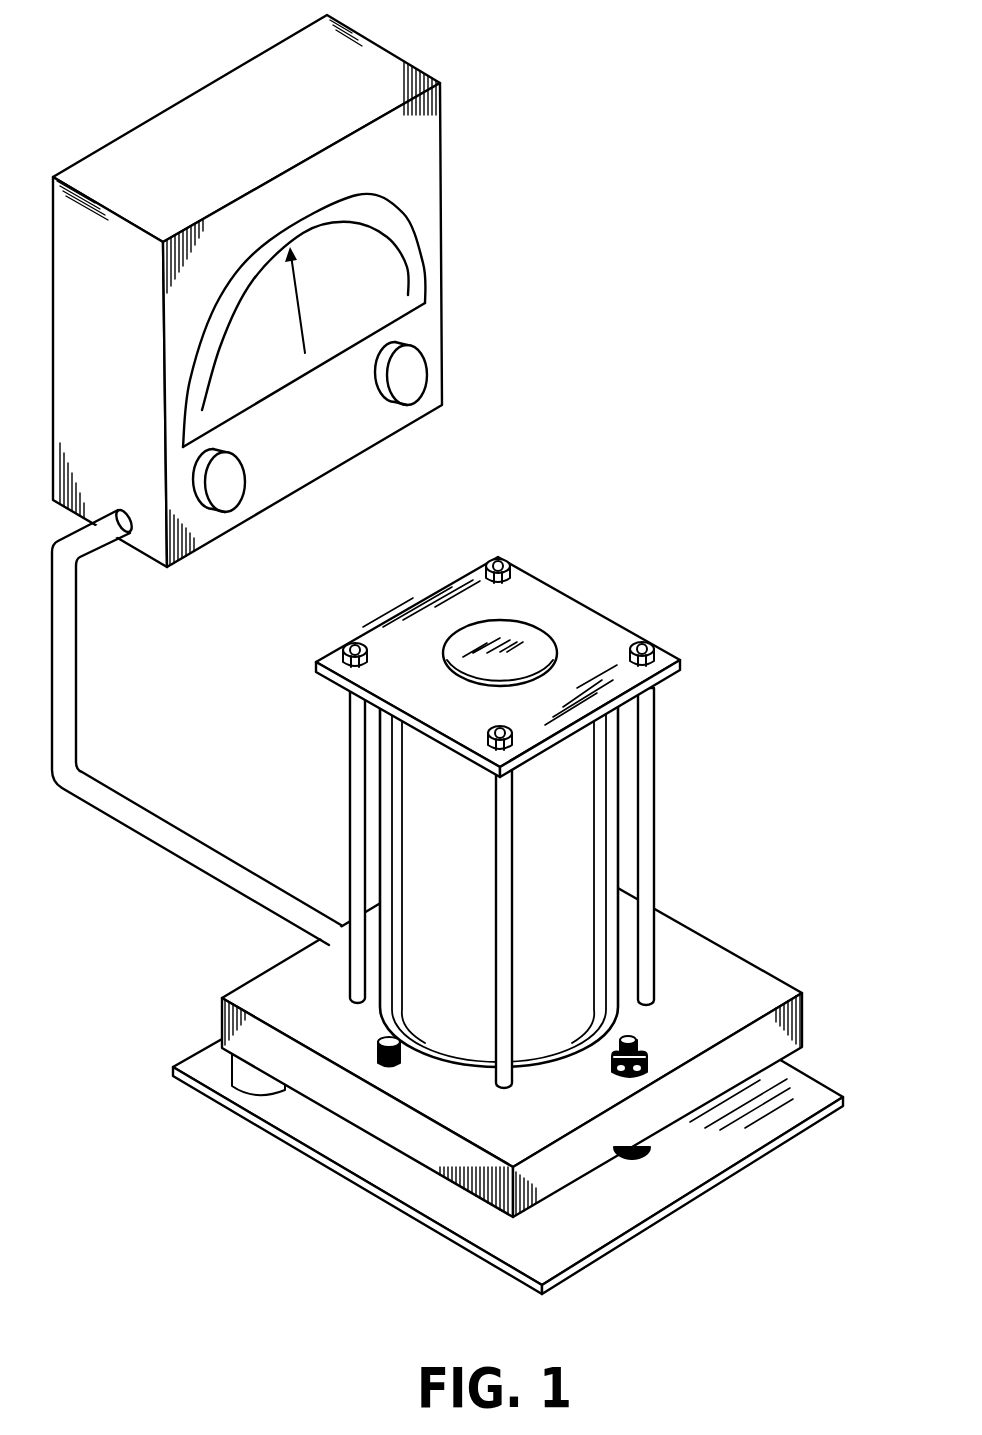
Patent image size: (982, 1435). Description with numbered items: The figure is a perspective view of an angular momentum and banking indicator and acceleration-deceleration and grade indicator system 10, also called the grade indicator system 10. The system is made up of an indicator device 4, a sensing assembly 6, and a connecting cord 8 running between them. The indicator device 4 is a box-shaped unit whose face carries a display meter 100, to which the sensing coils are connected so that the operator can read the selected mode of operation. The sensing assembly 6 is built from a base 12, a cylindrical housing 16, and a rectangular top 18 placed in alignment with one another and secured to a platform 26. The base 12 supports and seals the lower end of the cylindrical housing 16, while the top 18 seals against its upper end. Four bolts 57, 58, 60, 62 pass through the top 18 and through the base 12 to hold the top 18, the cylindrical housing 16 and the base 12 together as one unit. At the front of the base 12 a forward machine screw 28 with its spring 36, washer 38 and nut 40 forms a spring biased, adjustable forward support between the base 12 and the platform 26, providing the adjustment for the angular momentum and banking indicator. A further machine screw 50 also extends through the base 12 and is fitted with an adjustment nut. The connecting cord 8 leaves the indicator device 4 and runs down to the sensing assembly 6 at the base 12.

The grade indicator system 10 is at (733, 56).
The indicator device 4 is at (478, 235).
The display meter 100 is at (374, 295).
The sensing assembly 6 is at (785, 711).
The connecting cord 8 is at (97, 658).
The base 12 is at (527, 1021).
The cylindrical housing 16 is at (568, 825).
The rectangular top 18 is at (498, 667).
The platform 26 is at (533, 1090).
The forward machine screw 28 is at (676, 1019).
The spring 36 is at (665, 1157).
The washer 38 is at (585, 1086).
The nut 40 is at (664, 1037).
The machine screw 50 is at (354, 1036).
The bolt 57 is at (470, 724).
The bolt 58 is at (321, 632).
The bolt 60 is at (679, 633).
The bolt 62 is at (533, 554).